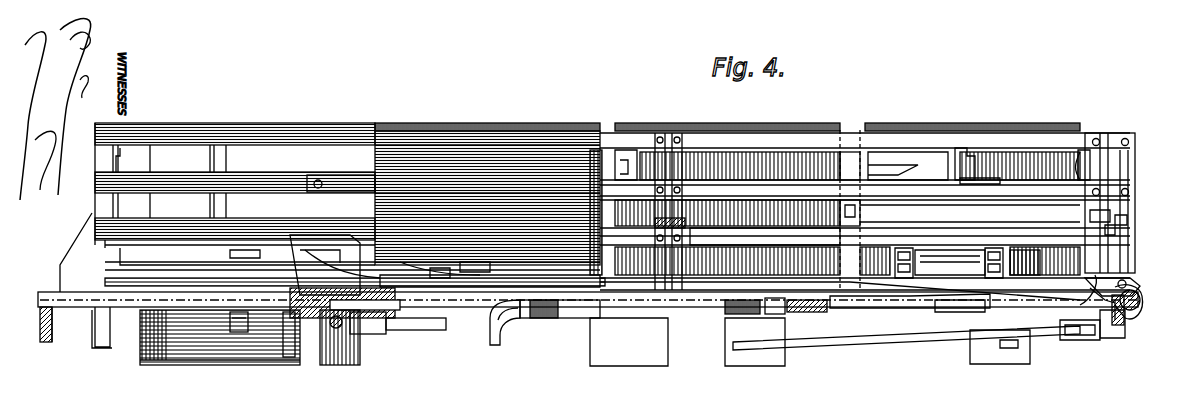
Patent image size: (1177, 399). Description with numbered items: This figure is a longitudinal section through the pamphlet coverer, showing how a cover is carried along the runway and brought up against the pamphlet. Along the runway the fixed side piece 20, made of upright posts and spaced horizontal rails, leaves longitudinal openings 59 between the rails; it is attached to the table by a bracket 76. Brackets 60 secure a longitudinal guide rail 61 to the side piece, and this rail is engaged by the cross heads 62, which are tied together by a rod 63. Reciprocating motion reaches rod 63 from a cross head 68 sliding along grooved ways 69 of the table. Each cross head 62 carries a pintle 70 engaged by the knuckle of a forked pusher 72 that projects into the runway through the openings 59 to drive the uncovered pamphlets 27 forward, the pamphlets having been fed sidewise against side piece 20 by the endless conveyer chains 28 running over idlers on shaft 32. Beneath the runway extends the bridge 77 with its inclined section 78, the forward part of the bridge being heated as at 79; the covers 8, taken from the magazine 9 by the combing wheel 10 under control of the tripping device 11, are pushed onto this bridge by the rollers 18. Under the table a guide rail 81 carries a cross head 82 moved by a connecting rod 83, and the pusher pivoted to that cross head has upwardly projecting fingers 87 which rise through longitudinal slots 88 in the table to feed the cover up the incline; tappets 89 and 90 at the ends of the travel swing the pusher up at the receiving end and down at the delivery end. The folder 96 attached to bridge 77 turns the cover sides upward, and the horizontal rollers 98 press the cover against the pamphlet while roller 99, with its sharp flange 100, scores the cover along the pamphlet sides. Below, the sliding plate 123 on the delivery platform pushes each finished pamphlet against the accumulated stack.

The covers 8 is at (404, 170).
The magazine 9 is at (1030, 125).
The combing wheel 10 is at (523, 122).
The tripping device 11 is at (1150, 225).
The rollers 18 is at (1108, 282).
The fixed side piece 20 is at (215, 160).
The uncovered pamphlets 27 is at (484, 103).
The endless conveyer chains 28 is at (1040, 270).
The shaft 32 is at (970, 270).
The longitudinal openings 59 is at (848, 152).
The brackets 60 is at (1108, 140).
The longitudinal guide rail 61 is at (347, 162).
The cross heads 62 is at (985, 180).
The rod 63 is at (712, 232).
The cross head 68 is at (300, 305).
The grooved ways 69 is at (222, 305).
The pintle 70 is at (968, 158).
The pusher 72 is at (902, 178).
The bracket 76 is at (620, 145).
The bridge 77 is at (480, 325).
The inclined section 78 is at (840, 292).
The heating means 79 is at (502, 345).
The guide rail 81 is at (1000, 340).
The cross head 82 is at (1090, 340).
The connecting rod 83 is at (885, 338).
The fingers 87 is at (1122, 308).
The longitudinal slots 88 is at (942, 308).
The tappet 89 is at (1110, 335).
The tappet 90 is at (812, 300).
The folder 96 is at (570, 268).
The rollers 98 is at (470, 270).
The roller 99 is at (370, 242).
The flange 100 is at (420, 320).
The sliding plate 123 is at (238, 330).